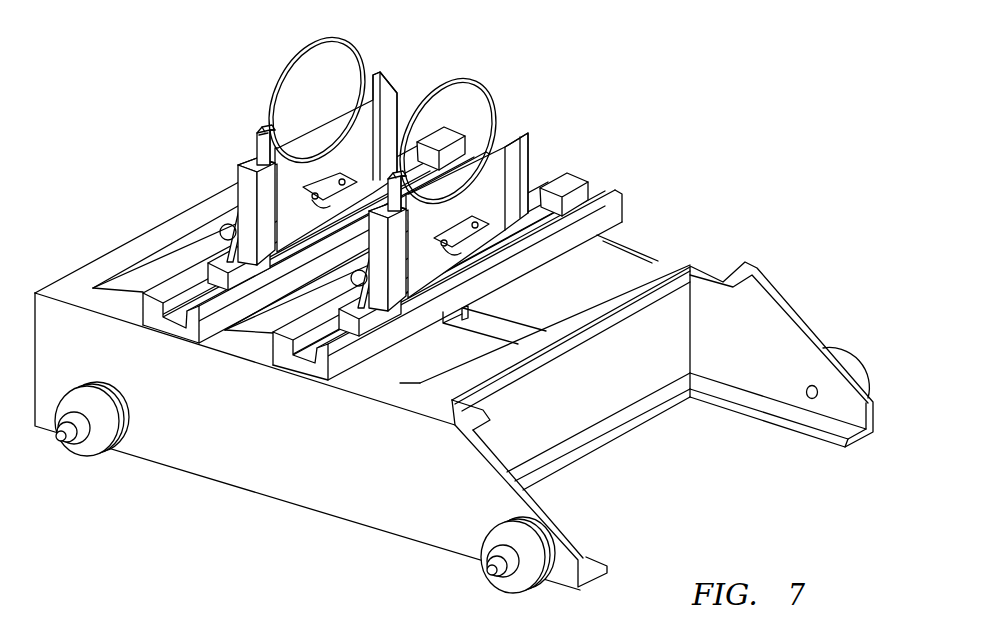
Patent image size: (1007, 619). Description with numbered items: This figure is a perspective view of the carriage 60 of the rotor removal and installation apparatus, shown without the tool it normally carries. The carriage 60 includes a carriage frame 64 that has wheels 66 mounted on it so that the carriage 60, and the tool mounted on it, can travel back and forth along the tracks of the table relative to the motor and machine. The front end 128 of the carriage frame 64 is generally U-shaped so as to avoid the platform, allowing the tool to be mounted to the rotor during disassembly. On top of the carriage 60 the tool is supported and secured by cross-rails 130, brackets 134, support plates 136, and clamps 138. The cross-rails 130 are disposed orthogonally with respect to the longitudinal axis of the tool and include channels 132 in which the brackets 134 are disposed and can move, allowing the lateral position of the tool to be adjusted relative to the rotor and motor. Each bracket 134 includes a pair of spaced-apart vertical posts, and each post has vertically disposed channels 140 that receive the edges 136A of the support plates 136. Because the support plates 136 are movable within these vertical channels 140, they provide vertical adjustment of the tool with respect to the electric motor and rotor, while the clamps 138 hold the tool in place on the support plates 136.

The carriage 60 is at (454, 309).
The carriage frame 64 is at (333, 487).
The wheels 66 is at (88, 458).
The front end 128 is at (685, 452).
The cross-rails 130 is at (185, 328).
The channels 132 is at (367, 272).
The brackets 134 is at (376, 168).
The support plates 136 is at (354, 168).
The edges 136A is at (260, 141).
The clamps 138 is at (330, 38).
The vertically disposed channels 140 is at (490, 230).